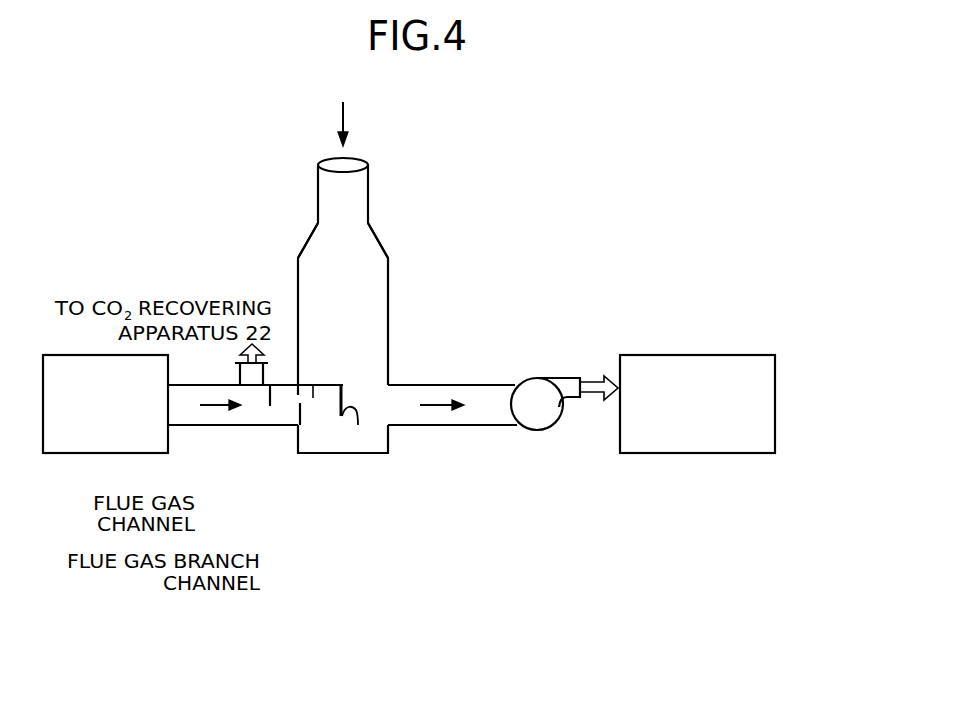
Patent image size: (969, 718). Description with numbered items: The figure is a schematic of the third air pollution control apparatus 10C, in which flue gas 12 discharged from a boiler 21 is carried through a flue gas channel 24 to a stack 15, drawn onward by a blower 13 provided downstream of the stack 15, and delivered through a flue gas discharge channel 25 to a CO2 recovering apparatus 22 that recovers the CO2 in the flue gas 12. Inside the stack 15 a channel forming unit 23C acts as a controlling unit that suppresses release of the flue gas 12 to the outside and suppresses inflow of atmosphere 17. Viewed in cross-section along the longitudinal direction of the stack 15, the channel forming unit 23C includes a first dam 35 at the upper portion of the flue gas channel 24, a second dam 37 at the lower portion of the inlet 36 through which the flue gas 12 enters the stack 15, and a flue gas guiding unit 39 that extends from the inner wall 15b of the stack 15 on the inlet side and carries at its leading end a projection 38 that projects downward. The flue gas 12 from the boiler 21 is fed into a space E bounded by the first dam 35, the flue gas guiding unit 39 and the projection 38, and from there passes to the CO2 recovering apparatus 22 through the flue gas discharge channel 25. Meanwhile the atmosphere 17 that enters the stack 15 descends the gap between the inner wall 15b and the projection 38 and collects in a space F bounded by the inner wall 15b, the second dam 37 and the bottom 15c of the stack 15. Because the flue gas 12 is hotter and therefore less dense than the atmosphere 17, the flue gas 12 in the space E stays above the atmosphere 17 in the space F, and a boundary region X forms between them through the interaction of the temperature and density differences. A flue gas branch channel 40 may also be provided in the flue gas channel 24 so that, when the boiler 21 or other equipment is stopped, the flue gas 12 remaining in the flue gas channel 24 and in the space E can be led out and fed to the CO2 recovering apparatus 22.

The third air pollution control apparatus 10C is at (204, 158).
The flue gas 12 is at (215, 407).
The blower 13 is at (535, 431).
The stack 15 is at (317, 192).
The inner wall 15b is at (297, 265).
The bottom 15c is at (350, 453).
The atmosphere 17 is at (343, 115).
The boiler 21 is at (57, 455).
The CO2 recovering apparatus 22 is at (682, 354).
The channel forming unit 23C is at (523, 540).
The flue gas channel 24 is at (190, 427).
The flue gas discharge channel 25 is at (472, 427).
The first dam 35 is at (271, 406).
The inlet 36 is at (295, 388).
The second dam 37 is at (301, 405).
The projection 38 is at (358, 425).
The flue gas guiding unit 39 is at (327, 388).
The flue gas branch channel 40 is at (252, 375).
The space E is at (314, 388).
The boundary region X is at (341, 387).
The space F is at (386, 437).